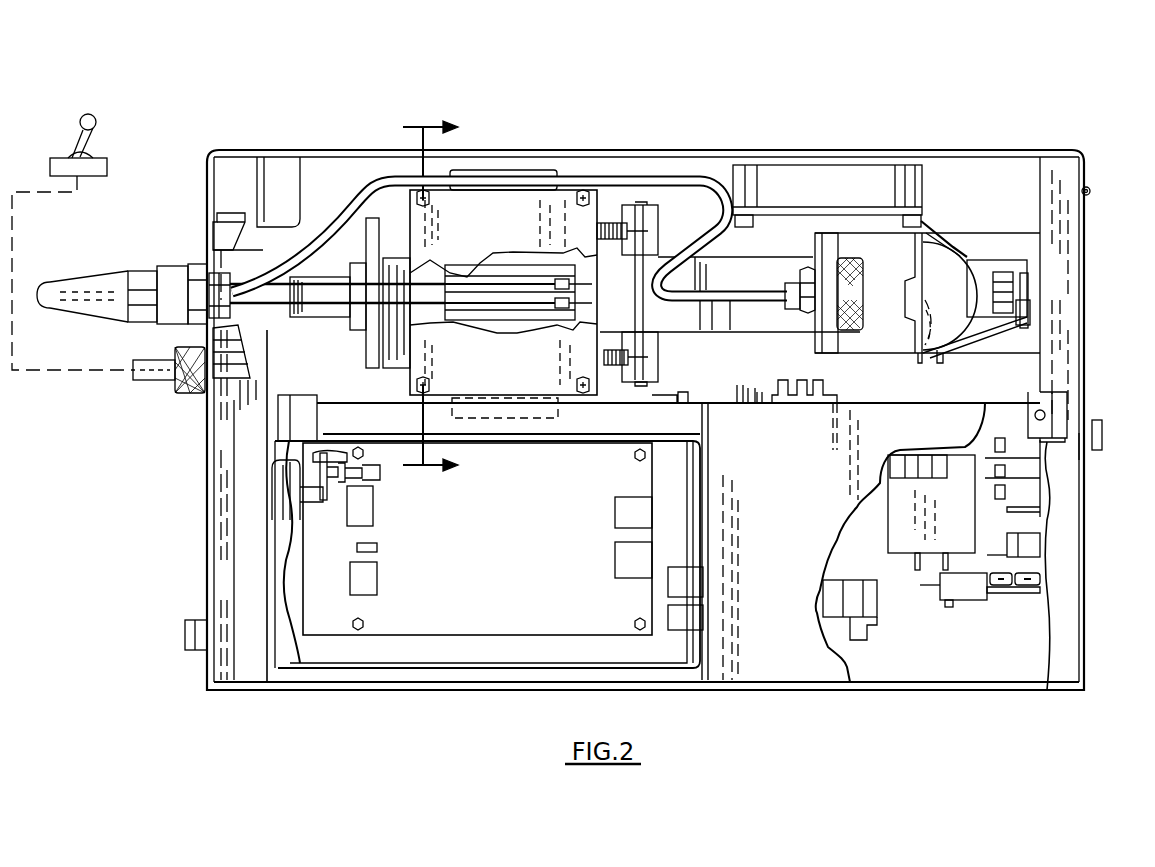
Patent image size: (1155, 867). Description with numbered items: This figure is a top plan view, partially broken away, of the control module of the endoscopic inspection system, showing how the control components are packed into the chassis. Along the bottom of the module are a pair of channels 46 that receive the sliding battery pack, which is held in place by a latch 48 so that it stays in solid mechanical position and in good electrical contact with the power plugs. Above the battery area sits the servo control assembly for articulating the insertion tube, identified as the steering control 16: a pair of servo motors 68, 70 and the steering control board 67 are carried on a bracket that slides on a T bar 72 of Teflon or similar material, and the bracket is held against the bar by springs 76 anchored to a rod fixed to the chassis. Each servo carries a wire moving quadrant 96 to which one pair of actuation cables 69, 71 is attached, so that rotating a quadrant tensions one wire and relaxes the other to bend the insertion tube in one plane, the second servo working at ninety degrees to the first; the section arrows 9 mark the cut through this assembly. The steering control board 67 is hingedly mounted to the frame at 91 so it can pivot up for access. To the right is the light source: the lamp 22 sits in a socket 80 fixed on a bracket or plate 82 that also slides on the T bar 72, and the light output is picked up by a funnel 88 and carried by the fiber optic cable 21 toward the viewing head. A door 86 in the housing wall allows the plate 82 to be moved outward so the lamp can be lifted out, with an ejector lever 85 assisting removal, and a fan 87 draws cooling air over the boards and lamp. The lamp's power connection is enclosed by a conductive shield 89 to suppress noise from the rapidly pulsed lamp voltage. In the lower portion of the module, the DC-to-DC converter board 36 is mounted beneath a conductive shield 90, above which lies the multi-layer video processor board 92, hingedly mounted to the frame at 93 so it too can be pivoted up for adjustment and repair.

The section line 9- 9 is at (418, 295).
The steering control 16 is at (463, 230).
The fiber optic cable 21 is at (705, 176).
The lamp 22 is at (966, 256).
The DC-to-DC converter board 36 is at (698, 555).
The channels 46 is at (1047, 158).
The latch 48 is at (190, 620).
The steering control board 67 is at (490, 200).
The servo motor 68 is at (528, 180).
The actuation cables 69 is at (395, 262).
The servo motor 70 is at (513, 420).
The actuation cables 71 is at (396, 320).
The T bar 72 is at (737, 316).
The springs 76 is at (610, 240).
The socket 80 is at (232, 214).
The bracket or plate 82 is at (232, 380).
The ejector lever 85 is at (990, 340).
The door 86 is at (1088, 380).
The fan 87 is at (848, 175).
The funnel 88 is at (851, 334).
The conductive shield 89 is at (805, 685).
The conductive shield 90 is at (683, 467).
The hinge mounting 91 is at (586, 197).
The multi-layer board 92 is at (489, 554).
The hinge mounting 93 is at (365, 625).
The wire moving quadrant 96 is at (500, 276).